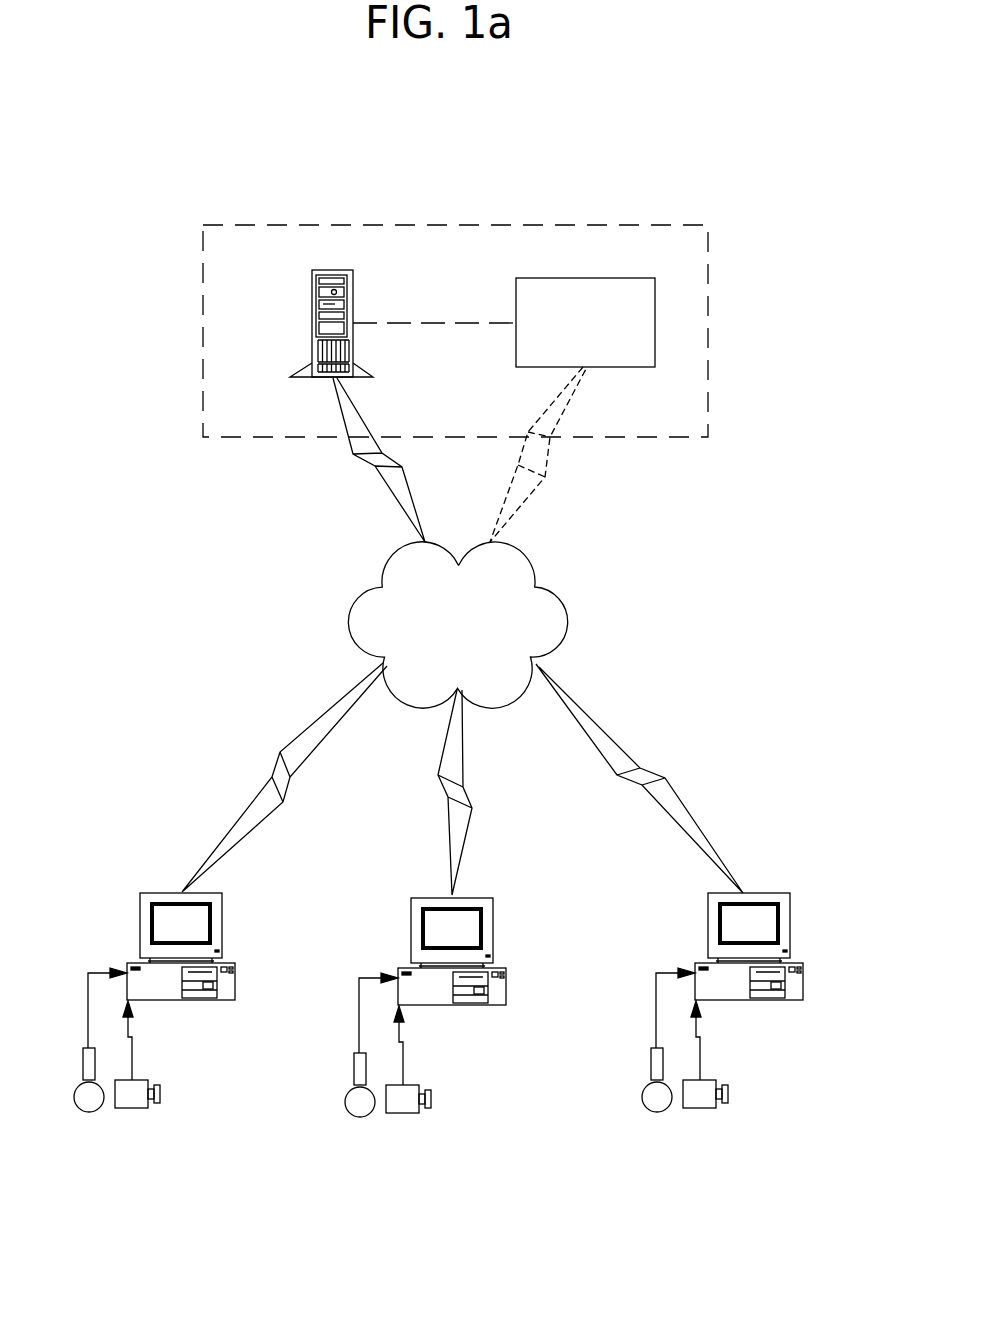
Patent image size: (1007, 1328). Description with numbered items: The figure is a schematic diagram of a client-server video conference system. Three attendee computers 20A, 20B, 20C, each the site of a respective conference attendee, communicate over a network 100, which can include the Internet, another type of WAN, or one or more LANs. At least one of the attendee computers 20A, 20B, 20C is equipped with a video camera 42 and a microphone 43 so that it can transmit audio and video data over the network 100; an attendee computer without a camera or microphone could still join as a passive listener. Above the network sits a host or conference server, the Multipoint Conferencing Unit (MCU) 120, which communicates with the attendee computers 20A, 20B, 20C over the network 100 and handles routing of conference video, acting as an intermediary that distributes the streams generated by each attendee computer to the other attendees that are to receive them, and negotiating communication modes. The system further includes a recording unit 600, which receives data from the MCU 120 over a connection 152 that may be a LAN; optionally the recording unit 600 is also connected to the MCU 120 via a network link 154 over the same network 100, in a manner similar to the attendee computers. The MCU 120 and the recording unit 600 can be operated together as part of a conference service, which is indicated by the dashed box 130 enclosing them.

The conference service 130 is at (716, 325).
The Multipoint Conferencing Unit (MCU) 120 is at (301, 323).
The recording unit 600 is at (578, 271).
The connection 152 is at (437, 326).
The network link 154 is at (546, 480).
The network 100 is at (350, 626).
The attendee computer 20A is at (143, 893).
The attendee computer 20B is at (493, 895).
The attendee computer 20C is at (788, 892).
The video camera 42 is at (142, 1080).
The microphone 43 is at (88, 1113).